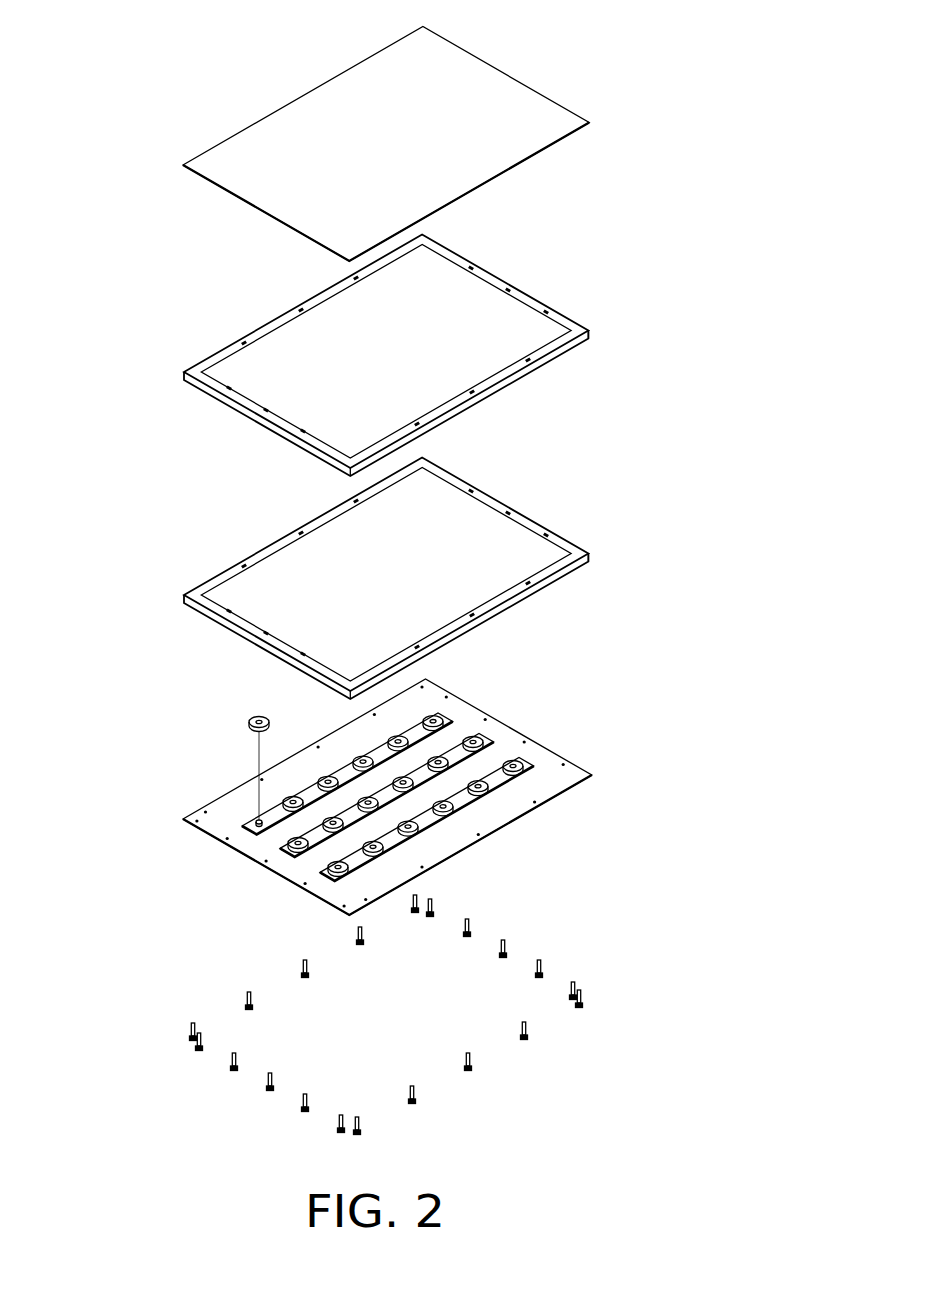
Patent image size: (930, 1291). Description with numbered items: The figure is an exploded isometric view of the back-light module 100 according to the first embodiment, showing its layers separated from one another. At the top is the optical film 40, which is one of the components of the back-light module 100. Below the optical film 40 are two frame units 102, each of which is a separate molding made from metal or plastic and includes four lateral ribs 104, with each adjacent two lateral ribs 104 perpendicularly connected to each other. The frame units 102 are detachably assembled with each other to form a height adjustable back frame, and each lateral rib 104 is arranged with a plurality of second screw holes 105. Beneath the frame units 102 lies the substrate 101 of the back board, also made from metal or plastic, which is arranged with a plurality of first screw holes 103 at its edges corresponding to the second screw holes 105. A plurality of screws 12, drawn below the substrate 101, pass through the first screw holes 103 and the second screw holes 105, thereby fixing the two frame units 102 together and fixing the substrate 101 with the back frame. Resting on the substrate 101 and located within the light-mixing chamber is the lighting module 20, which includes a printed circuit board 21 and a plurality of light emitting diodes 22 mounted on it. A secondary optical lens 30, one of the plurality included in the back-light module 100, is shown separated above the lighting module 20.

The back-light module 100 is at (300, 32).
The optical film 40 is at (240, 160).
The second screw holes 105 is at (523, 368).
The lateral ribs 104 is at (477, 623).
The frame units 102 is at (590, 333).
The substrate 101 is at (495, 823).
The first screw holes 103 is at (467, 845).
The lighting module 20 is at (306, 807).
The printed circuit board 21 is at (255, 838).
The light emitting diodes 22 is at (257, 818).
The secondary optical lenses 30 is at (252, 717).
The screws 12 is at (540, 968).